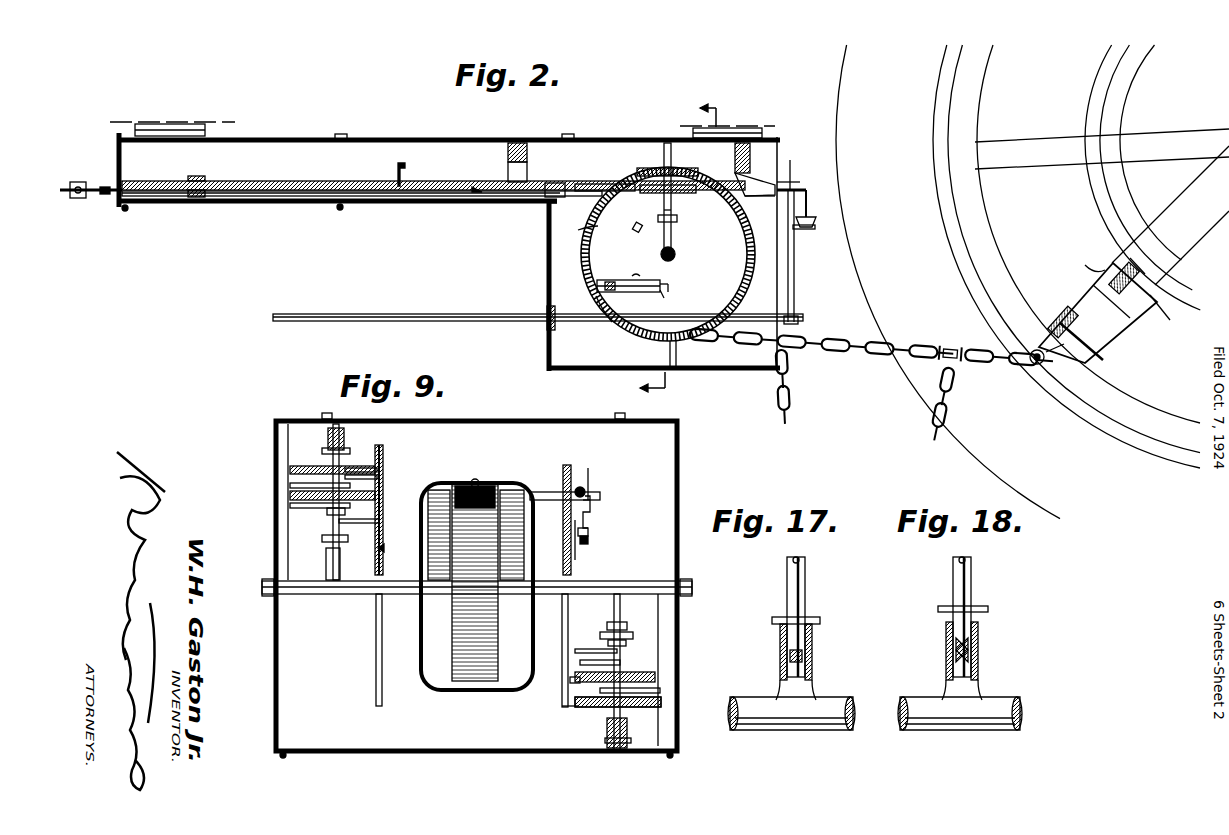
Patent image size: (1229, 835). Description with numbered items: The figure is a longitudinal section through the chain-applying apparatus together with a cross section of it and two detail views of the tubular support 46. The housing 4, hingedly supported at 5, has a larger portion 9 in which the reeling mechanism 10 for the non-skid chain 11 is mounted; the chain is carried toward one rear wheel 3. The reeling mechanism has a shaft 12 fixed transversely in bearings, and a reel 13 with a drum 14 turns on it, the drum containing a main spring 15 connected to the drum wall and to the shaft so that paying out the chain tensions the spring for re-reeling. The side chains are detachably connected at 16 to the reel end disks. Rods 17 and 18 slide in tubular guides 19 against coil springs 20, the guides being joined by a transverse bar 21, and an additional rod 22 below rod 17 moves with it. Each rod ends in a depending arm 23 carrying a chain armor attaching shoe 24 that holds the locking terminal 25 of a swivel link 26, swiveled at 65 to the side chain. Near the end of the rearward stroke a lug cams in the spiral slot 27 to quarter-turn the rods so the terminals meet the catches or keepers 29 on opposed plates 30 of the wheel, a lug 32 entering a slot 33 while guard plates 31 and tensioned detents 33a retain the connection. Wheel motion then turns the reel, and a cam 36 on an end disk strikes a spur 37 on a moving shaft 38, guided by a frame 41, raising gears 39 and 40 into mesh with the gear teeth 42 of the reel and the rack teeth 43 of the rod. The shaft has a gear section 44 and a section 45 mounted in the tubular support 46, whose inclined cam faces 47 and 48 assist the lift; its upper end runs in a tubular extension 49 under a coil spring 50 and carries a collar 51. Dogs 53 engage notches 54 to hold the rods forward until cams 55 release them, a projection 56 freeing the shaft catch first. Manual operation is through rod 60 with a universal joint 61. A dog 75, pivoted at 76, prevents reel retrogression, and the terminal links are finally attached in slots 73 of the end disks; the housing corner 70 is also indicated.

In FIG. 2, the rear wheel 3 is at (838, 88).
In FIG. 2, the housing 4 is at (418, 137).
In FIG. 9, the housing 4 is at (512, 420).
In FIG. 2, the hinge support 5 is at (165, 124).
In FIG. 2, the larger portion of housing 9 is at (547, 271).
In FIG. 9, the larger portion of housing 9 is at (672, 539).
In FIG. 2, the reeling mechanism 10 is at (736, 258).
In FIG. 9, the reeling mechanism 10 is at (571, 549).
In FIG. 2, the non-skid chain 11 is at (856, 338).
In FIG. 2, the shaft 12 is at (674, 257).
In FIG. 9, the shaft 12 is at (348, 596).
In FIG. 17, the shaft 12 is at (798, 731).
In FIG. 18, the shaft 12 is at (964, 731).
In FIG. 2, the reel 13 is at (578, 232).
In FIG. 9, the reel 13 is at (376, 676).
In FIG. 9, the drum 14 is at (490, 690).
In FIG. 9, the main spring 15 is at (494, 488).
In FIG. 2, the side chain connection 16 is at (614, 322).
In FIG. 2, the rod 17 is at (790, 182).
In FIG. 9, the rod 17 is at (384, 490).
In FIG. 2, the rod 18 is at (796, 241).
In FIG. 9, the rod 18 is at (590, 496).
In FIG. 2, the tubular guide 19 is at (462, 190).
In FIG. 9, the tubular guide 19 is at (380, 480).
In FIG. 2, the coil spring 20 is at (318, 183).
In FIG. 9, the transverse bar 21 is at (540, 492).
In FIG. 2, the additional rod 22 is at (430, 321).
In FIG. 9, the additional rod 22 is at (572, 679).
In FIG. 2, the depending arm 23 is at (807, 196).
In FIG. 2, the chain armor attaching shoe 24 is at (812, 218).
In FIG. 2, the locking terminal 25 is at (1060, 356).
In FIG. 2, the swivel link 26 is at (1036, 366).
In FIG. 2, the spiral slot 27 is at (564, 183).
In FIG. 2, the catch or keeper 29 is at (1136, 256).
In FIG. 2, the opposed plate 30 is at (1130, 323).
In FIG. 2, the shield or guard plate 31 is at (1085, 266).
In FIG. 2, the lug 32 is at (668, 290).
In FIG. 2, the slot or groove 33 is at (1124, 242).
In FIG. 2, the tensioned detent 33a is at (1094, 318).
In FIG. 2, the cam 36 is at (637, 232).
In FIG. 9, the cam 36 is at (378, 548).
In FIG. 9, the projection or spur 37 is at (360, 523).
In FIG. 2, the moving shaft 38 is at (676, 212).
In FIG. 9, the moving shaft 38 is at (330, 515).
In FIG. 2, the gear 39 is at (658, 170).
In FIG. 9, the gear 39 is at (290, 468).
In FIG. 2, the gear 40 is at (652, 194).
In FIG. 9, the gear 40 is at (290, 485).
In FIG. 9, the frame 41 is at (290, 495).
In FIG. 9, the gear teeth 42 is at (384, 470).
In FIG. 2, the rack teeth 43 is at (620, 183).
In FIG. 9, the rack teeth 43 is at (383, 516).
In FIG. 9, the shaft section 44 is at (290, 505).
In FIG. 9, the shaft section 45 is at (326, 542).
In FIG. 2, the tubular support 46 is at (676, 238).
In FIG. 9, the tubular support 46 is at (332, 560).
In FIG. 17, the tubular support 46 is at (800, 686).
In FIG. 18, the tubular support 46 is at (968, 686).
In FIG. 17, the inclined cam face 47 is at (806, 640).
In FIG. 18, the inclined cam face 47 is at (974, 640).
In FIG. 17, the inclined cam surface 48 is at (804, 656).
In FIG. 18, the inclined cam surface 48 is at (972, 658).
In FIG. 9, the tubular extension 49 is at (343, 446).
In FIG. 9, the coil spring 50 is at (333, 428).
In FIG. 2, the collar 51 is at (672, 170).
In FIG. 9, the collar 51 is at (333, 462).
In FIG. 2, the dog 53 is at (752, 184).
In FIG. 2, the notch 54 is at (762, 197).
In FIG. 2, the cam 55 is at (792, 186).
In FIG. 2, the projection 56 is at (398, 176).
In FIG. 2, the rod 60 is at (108, 185).
In FIG. 2, the universal joint 61 is at (98, 198).
In FIG. 2, the swivel 65 is at (610, 280).
In FIG. 2, the corner 70 is at (546, 202).
In FIG. 2, the slot 73 is at (594, 276).
In FIG. 9, the dog 75 is at (588, 530).
In FIG. 9, the pivot 76 is at (588, 540).